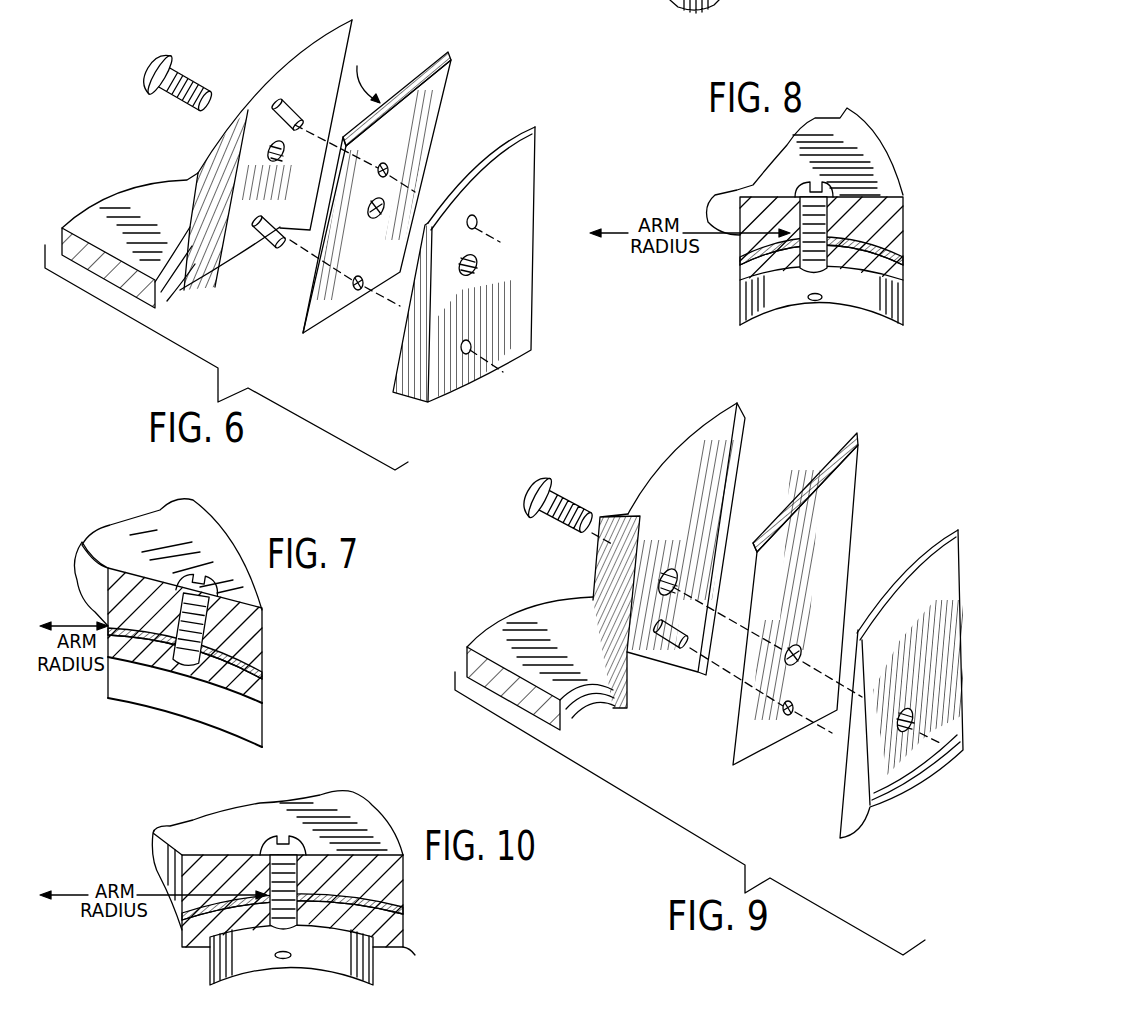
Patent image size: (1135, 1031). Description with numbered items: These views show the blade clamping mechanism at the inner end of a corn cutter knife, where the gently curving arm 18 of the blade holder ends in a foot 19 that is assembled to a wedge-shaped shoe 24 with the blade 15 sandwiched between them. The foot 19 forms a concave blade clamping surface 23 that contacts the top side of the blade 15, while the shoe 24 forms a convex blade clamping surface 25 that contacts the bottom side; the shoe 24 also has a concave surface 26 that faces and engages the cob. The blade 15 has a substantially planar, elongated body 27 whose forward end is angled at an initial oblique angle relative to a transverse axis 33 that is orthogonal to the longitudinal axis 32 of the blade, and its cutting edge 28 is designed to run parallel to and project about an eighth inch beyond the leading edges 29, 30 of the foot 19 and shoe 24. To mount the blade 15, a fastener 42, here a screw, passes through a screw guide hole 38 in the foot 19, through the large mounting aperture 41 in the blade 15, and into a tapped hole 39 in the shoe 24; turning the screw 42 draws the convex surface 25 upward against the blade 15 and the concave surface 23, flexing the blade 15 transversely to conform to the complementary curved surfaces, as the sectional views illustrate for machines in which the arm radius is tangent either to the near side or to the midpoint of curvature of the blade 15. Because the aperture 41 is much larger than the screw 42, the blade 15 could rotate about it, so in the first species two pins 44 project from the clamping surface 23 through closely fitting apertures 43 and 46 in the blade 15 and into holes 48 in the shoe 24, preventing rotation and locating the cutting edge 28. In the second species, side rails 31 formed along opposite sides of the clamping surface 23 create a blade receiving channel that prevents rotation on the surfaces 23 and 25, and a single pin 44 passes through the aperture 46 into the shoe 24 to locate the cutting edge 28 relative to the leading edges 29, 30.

In FIG. 6, the blade 15 is at (397, 176).
In FIG. 8, the blade 15 is at (853, 245).
In FIG. 7, the blade 15 is at (147, 633).
In FIG. 10, the blade 15 is at (212, 915).
In FIG. 9, the blade 15 is at (818, 601).
In FIG. 6, the arm 18 is at (97, 213).
In FIG. 9, the arm 18 is at (580, 658).
In FIG. 6, the foot 19 is at (270, 148).
In FIG. 9, the foot 19 is at (639, 555).
In FIG. 6, the concave blade clamping surface 23 is at (343, 38).
In FIG. 8, the concave blade clamping surface 23 is at (903, 259).
In FIG. 7, the concave blade clamping surface 23 is at (245, 660).
In FIG. 10, the concave blade clamping surface 23 is at (368, 910).
In FIG. 9, the concave blade clamping surface 23 is at (688, 497).
In FIG. 6, the shoe 24 is at (472, 266).
In FIG. 9, the shoe 24 is at (903, 661).
In FIG. 6, the convex blade clamping surface 25 is at (400, 362).
In FIG. 8, the convex blade clamping surface 25 is at (897, 260).
In FIG. 7, the convex blade clamping surface 25 is at (258, 673).
In FIG. 10, the convex blade clamping surface 25 is at (387, 918).
In FIG. 6, the concave surface 26 is at (519, 344).
In FIG. 8, the concave surface 26 is at (808, 294).
In FIG. 7, the concave surface 26 is at (234, 710).
In FIG. 10, the concave surface 26 is at (330, 966).
In FIG. 9, the concave surface 26 is at (918, 687).
In FIG. 6, the body 27 is at (341, 306).
In FIG. 9, the body 27 is at (840, 604).
In FIG. 6, the cutting edge 28 is at (340, 142).
In FIG. 9, the cutting edge 28 is at (790, 503).
In FIG. 6, the leading edge 29 is at (300, 47).
In FIG. 9, the leading edge 29 is at (662, 457).
In FIG. 6, the leading edge 30 is at (497, 155).
In FIG. 10, the side rails 31 is at (395, 953).
In FIG. 9, the side rails 31 is at (627, 698).
In FIG. 6, the longitudinal axis 32 is at (409, 48).
In FIG. 9, the longitudinal axis 32 is at (806, 470).
In FIG. 6, the transverse axis 33 is at (448, 54).
In FIG. 6, the screw guide hole 38 is at (284, 148).
In FIG. 9, the screw guide hole 38 is at (667, 577).
In FIG. 6, the tapped hole 39 is at (478, 266).
In FIG. 9, the tapped hole 39 is at (913, 732).
In FIG. 6, the aperture 41 is at (380, 219).
In FIG. 9, the aperture 41 is at (799, 648).
In FIG. 6, the fastener 42 is at (148, 76).
In FIG. 8, the fastener 42 is at (800, 190).
In FIG. 7, the fastener 42 is at (200, 575).
In FIG. 10, the fastener 42 is at (262, 848).
In FIG. 9, the fastener 42 is at (525, 500).
In FIG. 6, the aperture 43 is at (388, 170).
In FIG. 6, the pins 44 is at (279, 107).
In FIG. 9, the pins 44 is at (680, 641).
In FIG. 6, the aperture 46 is at (360, 290).
In FIG. 9, the aperture 46 is at (790, 714).
In FIG. 6, the holes 48 is at (476, 221).